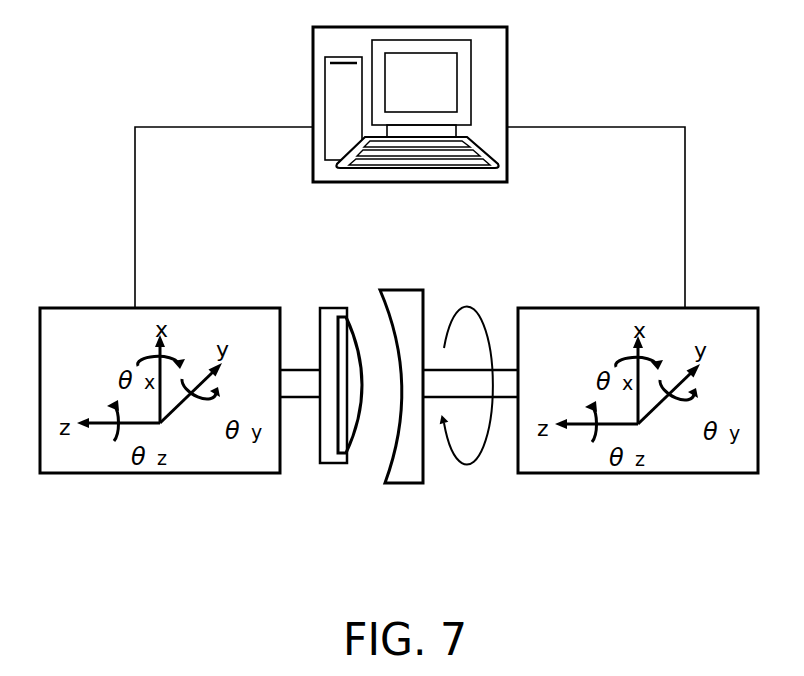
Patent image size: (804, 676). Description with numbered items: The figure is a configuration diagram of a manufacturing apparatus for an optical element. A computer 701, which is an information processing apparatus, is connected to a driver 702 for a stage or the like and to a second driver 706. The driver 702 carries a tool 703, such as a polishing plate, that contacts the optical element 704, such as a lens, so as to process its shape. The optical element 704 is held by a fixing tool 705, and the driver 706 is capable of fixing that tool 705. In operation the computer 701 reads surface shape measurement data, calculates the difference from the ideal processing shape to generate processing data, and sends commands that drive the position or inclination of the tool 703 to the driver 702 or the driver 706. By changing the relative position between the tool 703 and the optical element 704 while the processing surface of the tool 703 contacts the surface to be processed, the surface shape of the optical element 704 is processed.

The computer 701 is at (507, 103).
The driver 702 is at (608, 473).
The tool 703 is at (413, 486).
The optical element 704 is at (356, 458).
The tool 705 is at (323, 465).
The driver 706 is at (177, 473).